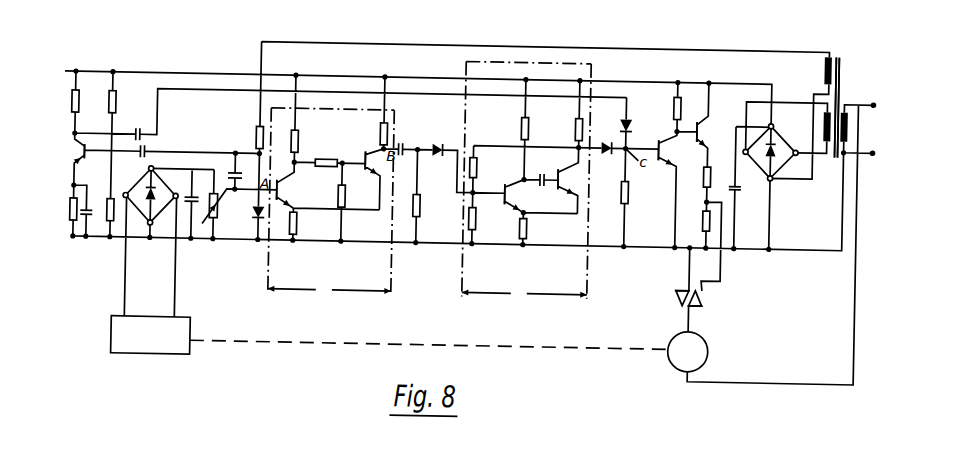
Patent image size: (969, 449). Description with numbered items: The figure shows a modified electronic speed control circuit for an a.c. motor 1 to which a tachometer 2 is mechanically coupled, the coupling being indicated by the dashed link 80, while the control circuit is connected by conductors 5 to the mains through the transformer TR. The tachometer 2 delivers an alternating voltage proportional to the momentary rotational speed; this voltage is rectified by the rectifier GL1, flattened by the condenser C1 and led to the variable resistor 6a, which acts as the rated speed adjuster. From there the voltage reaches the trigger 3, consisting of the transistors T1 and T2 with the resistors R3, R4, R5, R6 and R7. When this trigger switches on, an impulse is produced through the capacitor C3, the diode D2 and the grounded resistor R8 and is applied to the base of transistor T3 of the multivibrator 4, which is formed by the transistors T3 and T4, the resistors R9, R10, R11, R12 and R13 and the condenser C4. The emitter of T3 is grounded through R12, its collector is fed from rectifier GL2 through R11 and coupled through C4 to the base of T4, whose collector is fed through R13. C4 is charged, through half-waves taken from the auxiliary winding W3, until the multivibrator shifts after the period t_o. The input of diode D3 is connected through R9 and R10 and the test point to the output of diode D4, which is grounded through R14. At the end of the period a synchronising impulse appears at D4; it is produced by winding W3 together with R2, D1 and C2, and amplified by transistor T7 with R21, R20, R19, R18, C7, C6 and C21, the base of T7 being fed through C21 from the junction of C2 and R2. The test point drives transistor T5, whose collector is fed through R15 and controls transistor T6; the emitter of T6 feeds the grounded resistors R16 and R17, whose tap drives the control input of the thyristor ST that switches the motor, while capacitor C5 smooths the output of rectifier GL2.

The a.c. motor 1 is at (696, 350).
The tachometer 2 is at (197, 332).
The control circuit 3 is at (331, 203).
The multivibrator 4 is at (527, 181).
The conductors 5 is at (871, 129).
The variable resistor 6a is at (228, 214).
The mechanical coupling 80 is at (538, 338).
The resistor R2 is at (250, 135).
The resistor R3 is at (302, 222).
The resistor R4 is at (352, 196).
The resistor R5 is at (304, 141).
The resistor R6 is at (326, 155).
The resistor R7 is at (372, 131).
The resistor R8 is at (426, 203).
The resistor R9 is at (484, 168).
The resistor R10 is at (488, 218).
The resistor R11 is at (511, 125).
The resistor R12 is at (535, 229).
The resistor R13 is at (565, 126).
The resistor R14 is at (640, 191).
The resistor R15 is at (692, 107).
The resistor R16 is at (696, 177).
The resistor R17 is at (695, 221).
The resistor R18 is at (72, 219).
The resistor R19 is at (109, 219).
The resistor R20 is at (127, 102).
The resistor R21 is at (90, 101).
The condenser C1 is at (199, 190).
The capacitor C2 is at (241, 168).
The capacitor C3 is at (408, 142).
The condenser C4 is at (543, 171).
The capacitor C5 is at (743, 196).
The capacitor C6 is at (141, 126).
The capacitor C7 is at (94, 204).
The capacitor C21 is at (158, 147).
The diode D1 is at (251, 205).
The diode D2 is at (438, 143).
The diode D3 is at (603, 156).
The diode D4 is at (638, 123).
The transistor T1 is at (290, 190).
The transistor T2 is at (380, 164).
The transistor T3 is at (518, 194).
The transistor T4 is at (570, 179).
The transistor T5 is at (671, 150).
The transistor T6 is at (708, 132).
The transistor T7 is at (72, 149).
The rectifier GL1 is at (148, 195).
The rectifier GL2 is at (775, 160).
The transformer TR is at (834, 118).
The auxiliary winding W3 is at (814, 71).
The thyristor ST is at (698, 302).